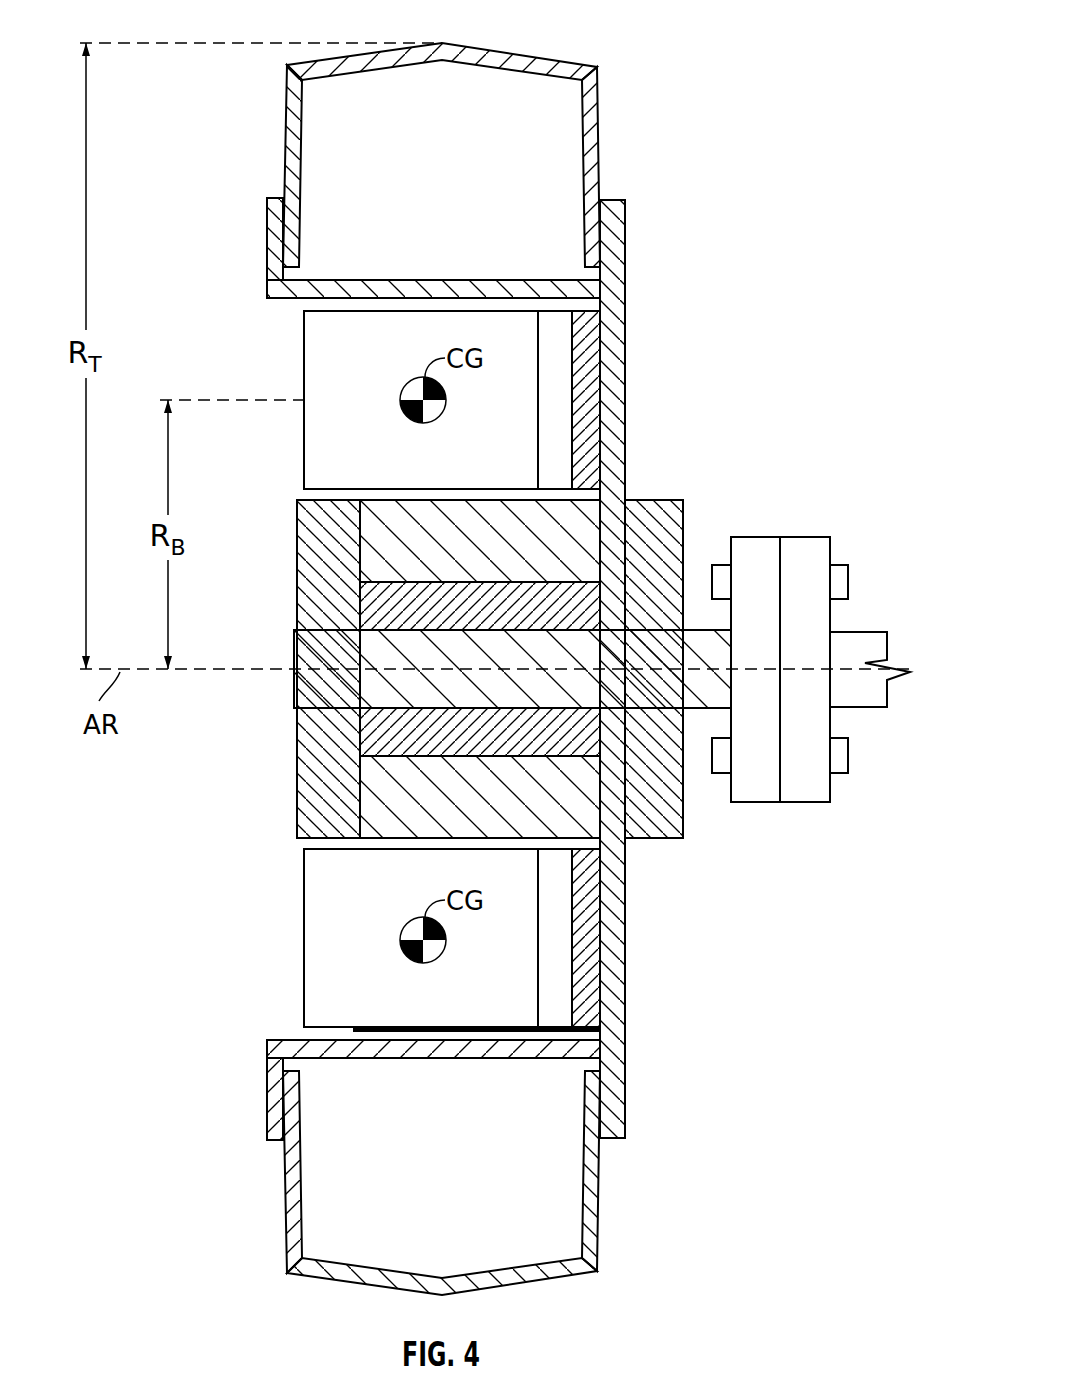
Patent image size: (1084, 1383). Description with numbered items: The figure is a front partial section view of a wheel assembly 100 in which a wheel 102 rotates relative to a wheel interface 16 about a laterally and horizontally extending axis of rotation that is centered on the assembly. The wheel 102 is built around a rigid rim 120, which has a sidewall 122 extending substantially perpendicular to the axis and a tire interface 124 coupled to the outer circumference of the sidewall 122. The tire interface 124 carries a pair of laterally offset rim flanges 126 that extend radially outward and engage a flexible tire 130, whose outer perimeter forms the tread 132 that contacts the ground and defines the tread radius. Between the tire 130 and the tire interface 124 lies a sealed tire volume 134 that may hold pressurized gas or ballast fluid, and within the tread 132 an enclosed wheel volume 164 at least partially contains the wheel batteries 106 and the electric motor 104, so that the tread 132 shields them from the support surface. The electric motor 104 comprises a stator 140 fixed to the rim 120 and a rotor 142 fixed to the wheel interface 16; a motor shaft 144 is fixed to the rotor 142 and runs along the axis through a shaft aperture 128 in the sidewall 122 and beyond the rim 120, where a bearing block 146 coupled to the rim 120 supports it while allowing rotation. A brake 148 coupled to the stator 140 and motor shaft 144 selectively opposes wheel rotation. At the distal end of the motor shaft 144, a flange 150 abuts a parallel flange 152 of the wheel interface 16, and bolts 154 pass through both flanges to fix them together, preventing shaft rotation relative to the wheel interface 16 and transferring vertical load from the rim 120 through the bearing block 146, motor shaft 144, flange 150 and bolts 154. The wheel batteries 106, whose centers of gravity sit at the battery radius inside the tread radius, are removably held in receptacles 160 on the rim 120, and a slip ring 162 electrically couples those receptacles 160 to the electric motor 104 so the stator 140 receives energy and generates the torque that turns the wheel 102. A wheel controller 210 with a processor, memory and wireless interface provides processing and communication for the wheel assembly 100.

The wheel interface 16 is at (849, 513).
The wheel assembly 100 is at (733, 115).
The wheel 102 is at (692, 255).
The electric motor 104 is at (240, 823).
The wheel batteries 106 is at (304, 352).
The rim 120 is at (625, 307).
The sidewall 122 is at (615, 427).
The tire interface 124 is at (643, 200).
The rim flanges 126 is at (270, 243).
The shaft aperture 128 is at (622, 748).
The tire 130 is at (293, 152).
The tread 132 is at (447, 31).
The tire volume 134 is at (345, 135).
The stator 140 is at (375, 530).
The rotor 142 is at (366, 741).
The motor shaft 144 is at (293, 696).
The bearing block 146 is at (652, 840).
The brake 148 is at (308, 563).
The flange 150 is at (752, 535).
The flange 152 is at (805, 803).
The bolts 154 is at (850, 580).
The receptacles 160 is at (558, 385).
The slip ring 162 is at (593, 935).
The wheel volume 164 is at (400, 140).
The wheel controller 210 is at (353, 1033).